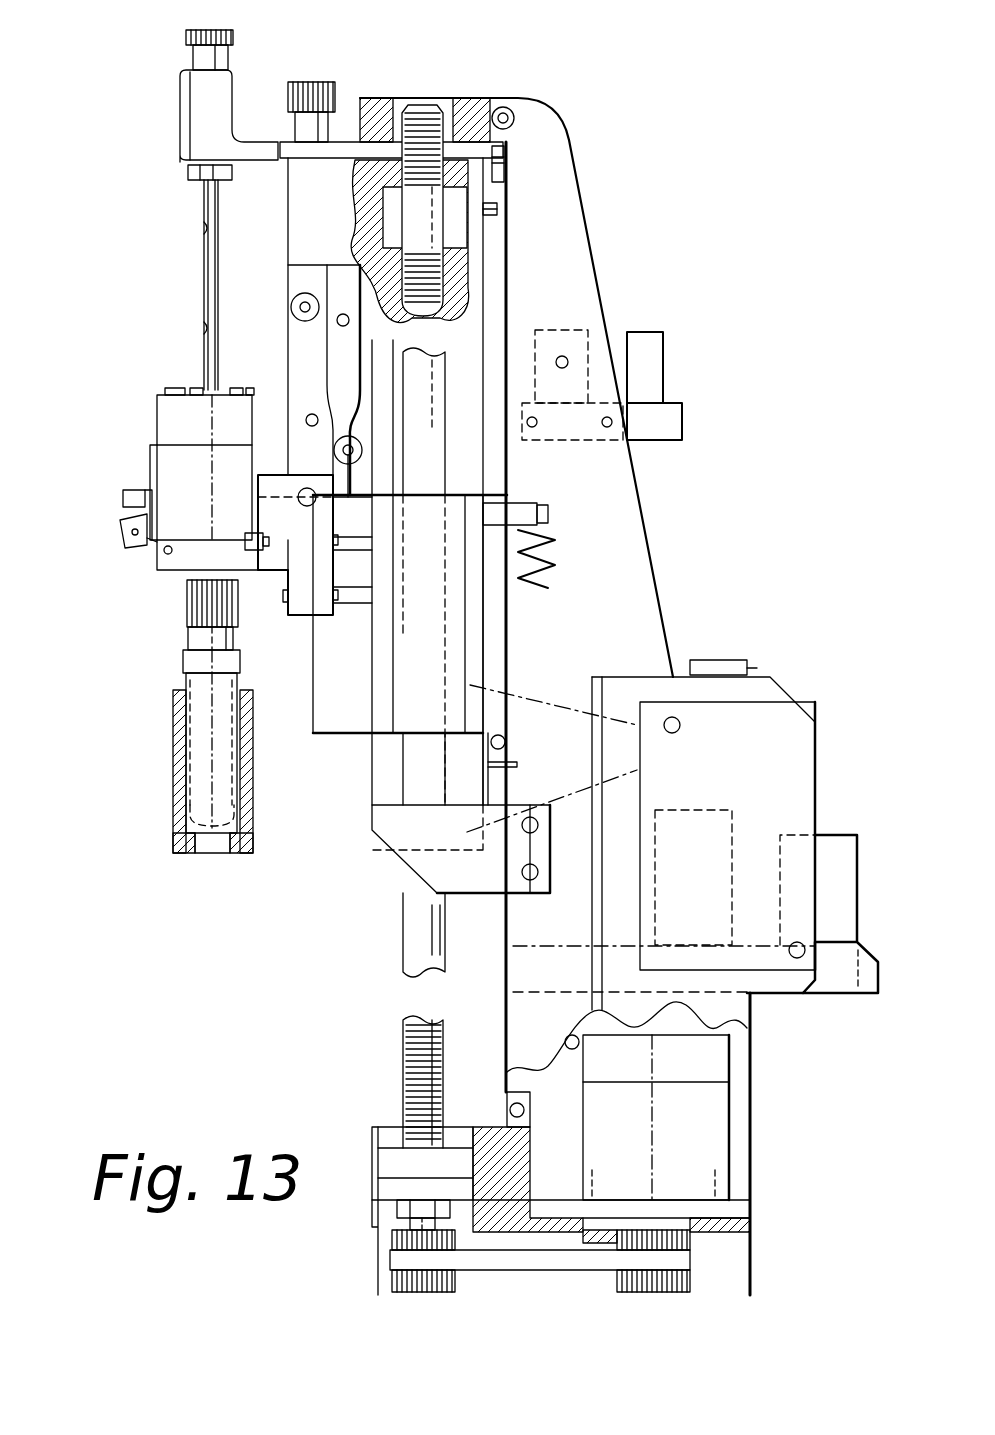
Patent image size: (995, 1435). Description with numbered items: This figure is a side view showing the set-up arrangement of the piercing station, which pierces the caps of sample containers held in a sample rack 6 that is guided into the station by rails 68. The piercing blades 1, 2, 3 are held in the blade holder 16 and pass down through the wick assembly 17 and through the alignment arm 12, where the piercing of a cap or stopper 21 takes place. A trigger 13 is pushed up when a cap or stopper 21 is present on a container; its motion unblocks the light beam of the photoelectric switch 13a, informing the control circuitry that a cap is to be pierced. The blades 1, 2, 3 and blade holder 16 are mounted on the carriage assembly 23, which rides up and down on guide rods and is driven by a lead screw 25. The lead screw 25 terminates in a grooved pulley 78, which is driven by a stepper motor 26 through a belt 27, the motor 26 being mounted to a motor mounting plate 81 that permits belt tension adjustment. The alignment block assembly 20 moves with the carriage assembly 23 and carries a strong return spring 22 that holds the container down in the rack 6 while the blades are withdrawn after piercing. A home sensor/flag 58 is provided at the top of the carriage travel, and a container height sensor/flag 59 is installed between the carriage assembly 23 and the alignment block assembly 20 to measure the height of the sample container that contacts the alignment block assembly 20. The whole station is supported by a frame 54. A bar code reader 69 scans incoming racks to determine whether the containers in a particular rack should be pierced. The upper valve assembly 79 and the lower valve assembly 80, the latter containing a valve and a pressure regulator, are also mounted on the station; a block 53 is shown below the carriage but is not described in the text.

The blade 1 is at (168, 285).
The blade 2 is at (168, 285).
The blade 3 is at (204, 278).
The rack 6 is at (184, 662).
The alignment arm 12 is at (157, 562).
The trigger 13 is at (92, 519).
The photoelectric switch 13a is at (125, 516).
The blade holder 16 is at (180, 117).
The wick assembly 17 is at (182, 392).
The alignment block assembly 20 is at (341, 735).
The cap or stopper 21 is at (187, 615).
The return spring 22 is at (545, 573).
The carriage assembly 23 is at (484, 322).
The lead screw 25 is at (477, 234).
The stepper motor 26 is at (732, 1105).
The belt 27 is at (690, 1255).
The block 53 is at (400, 858).
The frame 54 is at (581, 696).
The home sensor/flag 58 is at (507, 158).
The container height sensor/flag 59 is at (508, 750).
The rails 68 is at (173, 792).
The bar code reader 69 is at (777, 702).
The grooved pulley 78 is at (392, 1263).
The upper valve assembly 79 is at (667, 402).
The lower valve assembly 80 is at (878, 975).
The motor mounting plate 81 is at (698, 1233).